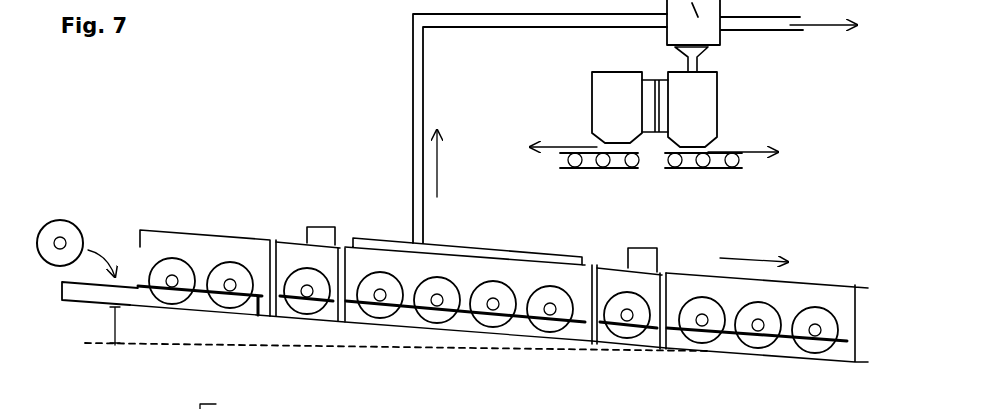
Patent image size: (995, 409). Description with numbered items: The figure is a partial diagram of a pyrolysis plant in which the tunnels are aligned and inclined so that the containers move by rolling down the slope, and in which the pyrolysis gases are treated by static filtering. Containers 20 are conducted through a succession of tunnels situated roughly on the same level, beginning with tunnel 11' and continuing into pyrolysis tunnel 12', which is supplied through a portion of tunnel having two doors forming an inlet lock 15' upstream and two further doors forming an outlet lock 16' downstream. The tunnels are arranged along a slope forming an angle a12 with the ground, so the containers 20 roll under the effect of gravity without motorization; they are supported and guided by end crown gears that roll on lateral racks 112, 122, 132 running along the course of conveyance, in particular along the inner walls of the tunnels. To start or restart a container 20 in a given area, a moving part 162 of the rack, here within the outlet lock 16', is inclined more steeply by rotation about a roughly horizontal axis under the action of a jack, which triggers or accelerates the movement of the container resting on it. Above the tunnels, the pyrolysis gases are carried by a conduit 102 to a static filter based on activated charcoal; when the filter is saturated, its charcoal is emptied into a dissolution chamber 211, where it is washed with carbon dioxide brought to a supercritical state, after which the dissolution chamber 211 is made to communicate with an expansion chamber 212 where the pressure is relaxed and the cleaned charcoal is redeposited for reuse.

The container 20 is at (75, 228).
The angle a12 is at (391, 329).
The tunnel 11' is at (203, 248).
The lateral rack 112 is at (257, 317).
The inlet lock 15' is at (307, 252).
The pyrolysis tunnel 12' is at (471, 271).
The lateral rack 122 is at (575, 320).
The outlet lock 16' is at (629, 275).
The moving part of the rack 162 is at (655, 343).
The lateral rack 132 is at (730, 337).
The conduit 102 is at (417, 50).
The expansion chamber 212 is at (615, 103).
The dissolution chamber 211 is at (707, 103).